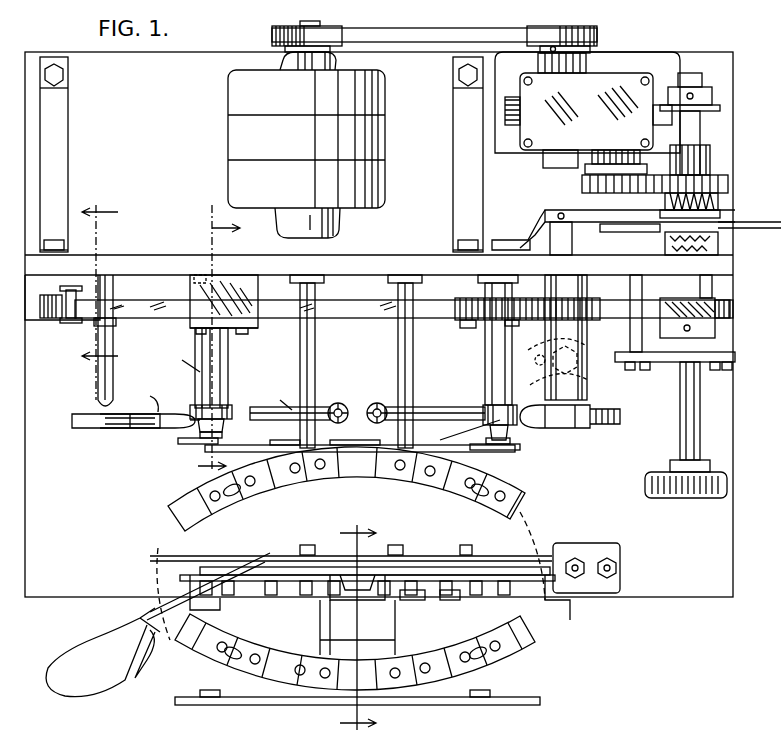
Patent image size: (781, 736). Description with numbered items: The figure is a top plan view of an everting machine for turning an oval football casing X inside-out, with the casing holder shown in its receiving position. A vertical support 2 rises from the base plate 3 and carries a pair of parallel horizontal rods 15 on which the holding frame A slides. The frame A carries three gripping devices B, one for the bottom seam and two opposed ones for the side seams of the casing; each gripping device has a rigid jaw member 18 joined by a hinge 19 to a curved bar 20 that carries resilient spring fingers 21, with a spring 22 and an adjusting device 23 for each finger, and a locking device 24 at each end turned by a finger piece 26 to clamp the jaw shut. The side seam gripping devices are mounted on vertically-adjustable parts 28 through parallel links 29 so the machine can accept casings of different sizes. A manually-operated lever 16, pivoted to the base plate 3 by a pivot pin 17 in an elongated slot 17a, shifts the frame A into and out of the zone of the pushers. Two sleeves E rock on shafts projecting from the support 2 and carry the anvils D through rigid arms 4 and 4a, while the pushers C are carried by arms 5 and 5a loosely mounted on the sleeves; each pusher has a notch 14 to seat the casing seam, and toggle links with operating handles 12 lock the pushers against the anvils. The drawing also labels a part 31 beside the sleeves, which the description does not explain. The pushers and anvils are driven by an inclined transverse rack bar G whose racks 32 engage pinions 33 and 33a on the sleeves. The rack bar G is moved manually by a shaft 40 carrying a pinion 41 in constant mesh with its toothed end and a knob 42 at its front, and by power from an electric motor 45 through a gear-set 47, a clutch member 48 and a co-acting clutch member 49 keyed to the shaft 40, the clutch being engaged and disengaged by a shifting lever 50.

The vertical support 2 is at (361, 256).
The base plate 3 is at (715, 585).
The rigid arm 4 is at (495, 408).
The rigid arm 4a is at (200, 408).
The arm 5 is at (510, 430).
The arm 5a is at (196, 430).
The operating handle 12 is at (343, 630).
The groove or notch 14 is at (372, 404).
The horizontal rod 15 is at (302, 358).
The manually-operated lever 16 is at (150, 655).
The pivot pin 17 is at (590, 392).
The elongated slot 17a is at (553, 358).
The rigid jaw member 18 is at (290, 462).
The hinge 19 is at (362, 447).
The bar 20 is at (300, 560).
The spring finger 21 is at (447, 570).
The spring 22 is at (488, 598).
The adjusting device 23 is at (440, 600).
The locking device 24 is at (210, 492).
The finger piece 26 is at (243, 500).
The vertically-adjustable part 28 is at (362, 575).
The parallel link 29 is at (356, 645).
The column 31 is at (100, 390).
The rack 32 is at (733, 310).
The pinion 33 is at (470, 300).
The pinion 33a is at (176, 270).
The shaft 40 is at (700, 430).
The pinion 41 is at (705, 322).
The knob or handle 42 is at (727, 485).
The electric motor 45 is at (245, 80).
The gear-set 47 is at (608, 78).
The clutch member 48 is at (718, 192).
The clutch member 49 is at (712, 210).
The shifting lever 50 is at (583, 215).
The holding frame A is at (148, 514).
The gripping device B is at (520, 485).
The pusher C is at (420, 412).
The anvil D is at (565, 428).
The sleeve E is at (492, 378).
The rack bar G is at (358, 275).
The football casing X is at (158, 530).